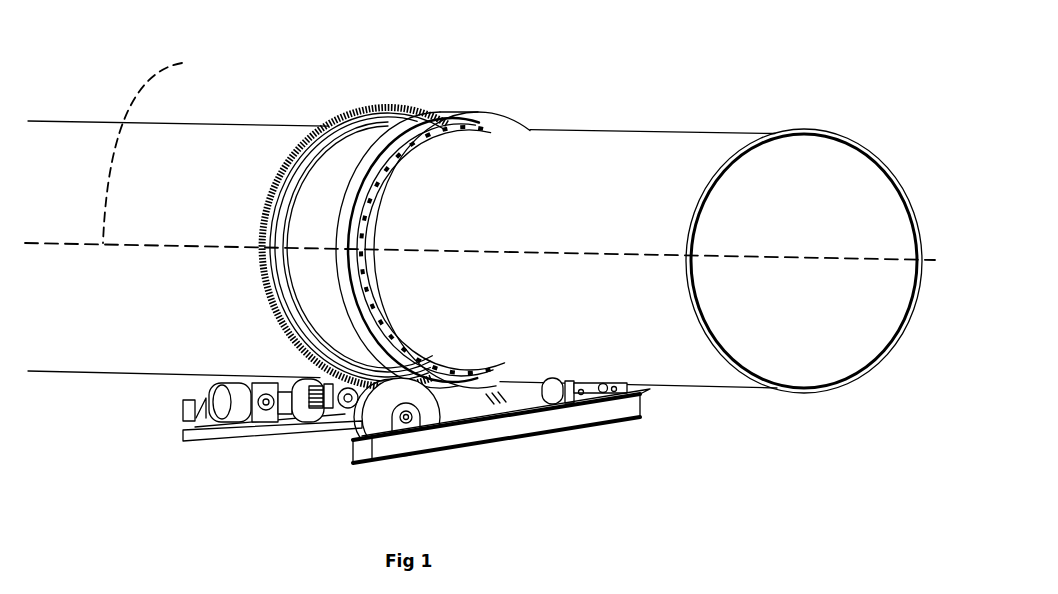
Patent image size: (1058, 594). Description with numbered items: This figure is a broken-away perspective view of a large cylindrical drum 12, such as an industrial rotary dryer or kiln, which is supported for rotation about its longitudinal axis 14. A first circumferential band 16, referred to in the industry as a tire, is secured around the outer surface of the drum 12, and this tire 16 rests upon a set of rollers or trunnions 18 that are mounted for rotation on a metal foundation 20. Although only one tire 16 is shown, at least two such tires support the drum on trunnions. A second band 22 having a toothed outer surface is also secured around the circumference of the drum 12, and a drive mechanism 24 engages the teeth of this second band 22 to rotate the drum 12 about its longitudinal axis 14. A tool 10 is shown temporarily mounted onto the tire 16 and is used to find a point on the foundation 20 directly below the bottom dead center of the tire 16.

The tool 10 is at (503, 404).
The cylindrical drum 12 is at (628, 131).
The longitudinal axis 14 is at (161, 148).
The first circumferential band 16 is at (485, 112).
The trunnions 18 is at (376, 411).
The foundation 20 is at (484, 442).
The second band 22 is at (380, 107).
The drive mechanism 24 is at (259, 446).